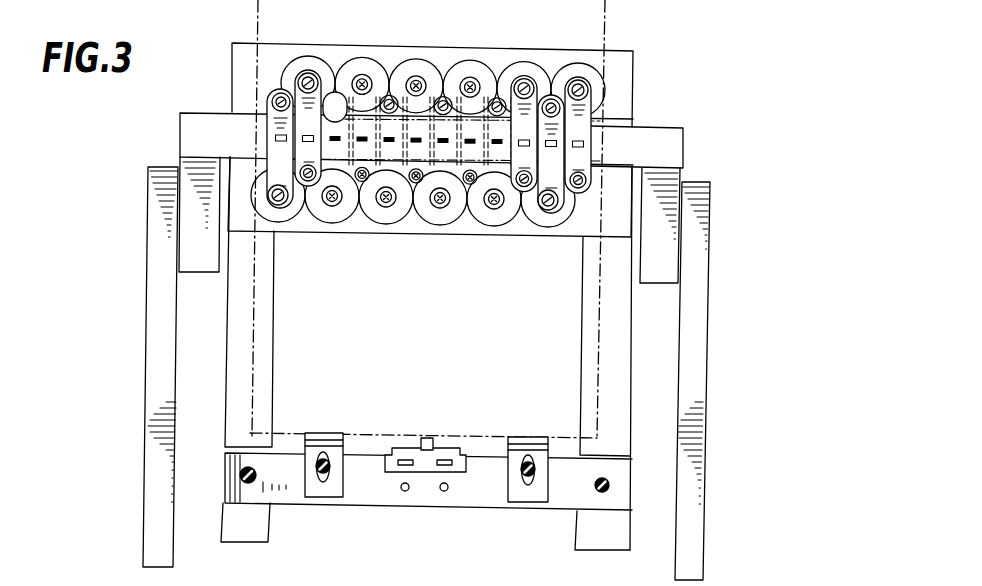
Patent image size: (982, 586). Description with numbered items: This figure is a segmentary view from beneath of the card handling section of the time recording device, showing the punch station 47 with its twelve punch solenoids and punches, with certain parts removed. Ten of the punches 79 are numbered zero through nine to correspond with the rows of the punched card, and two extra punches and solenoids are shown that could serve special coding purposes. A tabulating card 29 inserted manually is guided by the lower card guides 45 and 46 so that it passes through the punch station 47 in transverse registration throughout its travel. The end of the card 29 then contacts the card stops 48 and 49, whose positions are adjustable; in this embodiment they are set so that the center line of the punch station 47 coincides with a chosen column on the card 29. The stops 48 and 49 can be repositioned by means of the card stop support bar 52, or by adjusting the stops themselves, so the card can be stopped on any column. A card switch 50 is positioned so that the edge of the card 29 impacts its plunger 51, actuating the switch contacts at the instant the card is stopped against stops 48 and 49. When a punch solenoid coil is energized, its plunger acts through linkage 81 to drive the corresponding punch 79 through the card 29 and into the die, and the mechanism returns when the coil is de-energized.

The tabulating card 29 is at (600, 313).
The lower card guide 45 is at (274, 357).
The lower card guide 46 is at (583, 349).
The punch station 47 is at (192, 112).
The rollers 79 is at (358, 58).
The linkage 81 is at (556, 157).
The card stop support bar 52 is at (407, 508).
The card stop 48 is at (343, 473).
The card stop 49 is at (548, 484).
The card switch 50 is at (453, 455).
The plunger 51 is at (428, 436).